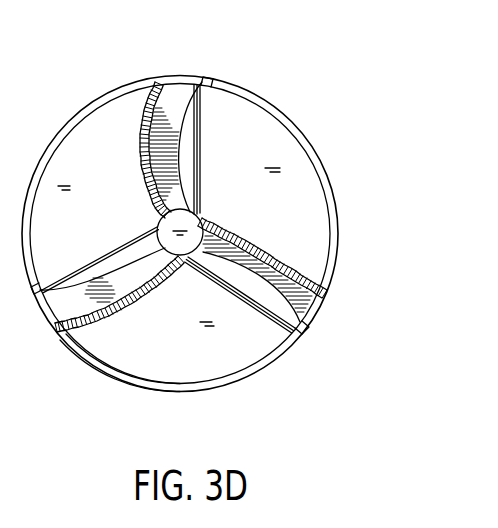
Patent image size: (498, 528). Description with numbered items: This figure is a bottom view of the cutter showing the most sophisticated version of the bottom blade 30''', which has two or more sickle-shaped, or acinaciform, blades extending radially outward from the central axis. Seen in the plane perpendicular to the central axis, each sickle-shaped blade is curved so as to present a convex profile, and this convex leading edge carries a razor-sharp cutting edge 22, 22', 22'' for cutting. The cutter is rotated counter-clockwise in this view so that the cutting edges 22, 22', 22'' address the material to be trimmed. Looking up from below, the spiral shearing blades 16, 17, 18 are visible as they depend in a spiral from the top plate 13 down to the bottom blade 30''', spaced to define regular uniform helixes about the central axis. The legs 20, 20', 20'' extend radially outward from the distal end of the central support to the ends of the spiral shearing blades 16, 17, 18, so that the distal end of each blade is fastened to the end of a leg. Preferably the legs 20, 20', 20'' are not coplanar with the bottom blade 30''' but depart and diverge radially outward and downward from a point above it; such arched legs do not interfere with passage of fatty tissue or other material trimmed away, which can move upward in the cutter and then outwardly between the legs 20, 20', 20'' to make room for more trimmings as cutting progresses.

The top plate 13 is at (118, 118).
The spiral shearing blade 16 is at (279, 117).
The spiral shearing blade 17 is at (103, 375).
The spiral shearing blade 18 is at (64, 122).
The leg 20 is at (219, 145).
The leg 20' is at (247, 299).
The leg 20'' is at (94, 259).
The cutting edge 22 is at (129, 150).
The cutting edge 22' is at (262, 244).
The cutting edge 22'' is at (119, 305).
The bottom blade 30''' is at (179, 187).